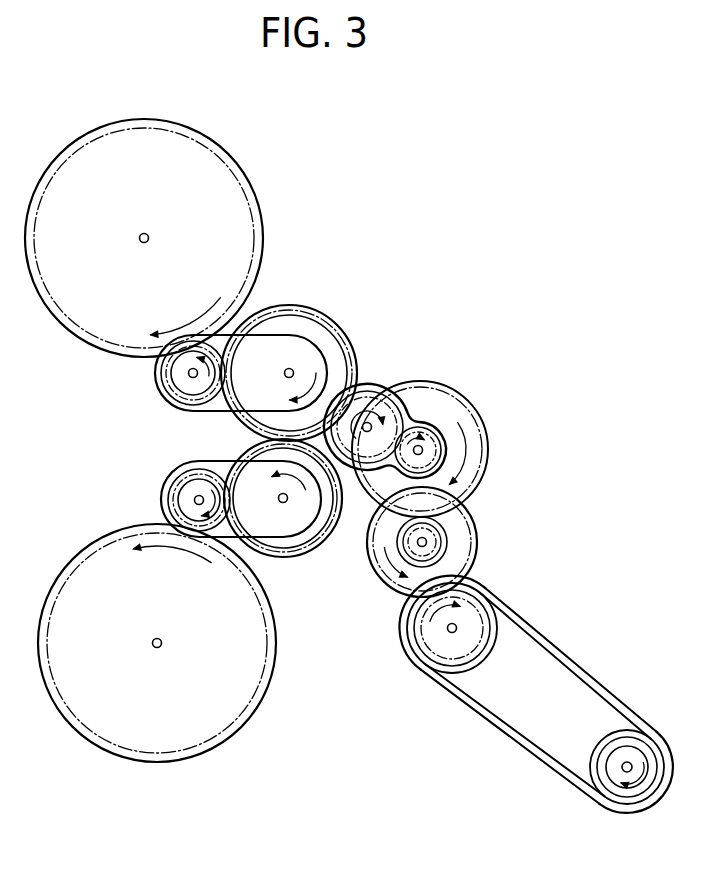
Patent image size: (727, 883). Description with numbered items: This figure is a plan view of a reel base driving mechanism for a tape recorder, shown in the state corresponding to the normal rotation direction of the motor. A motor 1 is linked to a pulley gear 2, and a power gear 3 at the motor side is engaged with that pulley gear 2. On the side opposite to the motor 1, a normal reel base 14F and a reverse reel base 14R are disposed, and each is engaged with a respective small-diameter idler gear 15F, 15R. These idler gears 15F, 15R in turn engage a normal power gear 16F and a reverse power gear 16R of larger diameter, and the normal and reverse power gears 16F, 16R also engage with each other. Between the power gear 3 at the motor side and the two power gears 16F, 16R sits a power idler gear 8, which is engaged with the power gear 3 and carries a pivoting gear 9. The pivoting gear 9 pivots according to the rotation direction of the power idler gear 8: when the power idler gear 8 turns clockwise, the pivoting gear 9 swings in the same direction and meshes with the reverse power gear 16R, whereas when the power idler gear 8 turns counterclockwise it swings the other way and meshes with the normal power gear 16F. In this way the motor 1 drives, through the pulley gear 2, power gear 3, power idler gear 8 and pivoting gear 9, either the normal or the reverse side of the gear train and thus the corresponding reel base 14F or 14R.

The reverse reel base 14R is at (105, 330).
The idler gear 15R is at (187, 376).
The reverse power gear 16R is at (332, 340).
The pivoting gear 9 is at (356, 410).
The power idler gear 8 is at (434, 442).
The power gear 3 is at (475, 521).
The pulley gear 2 is at (477, 610).
The motor 1 is at (620, 752).
The idler gear 15F is at (178, 491).
The normal power gear 16F is at (295, 542).
The normal reel base 14F is at (185, 737).